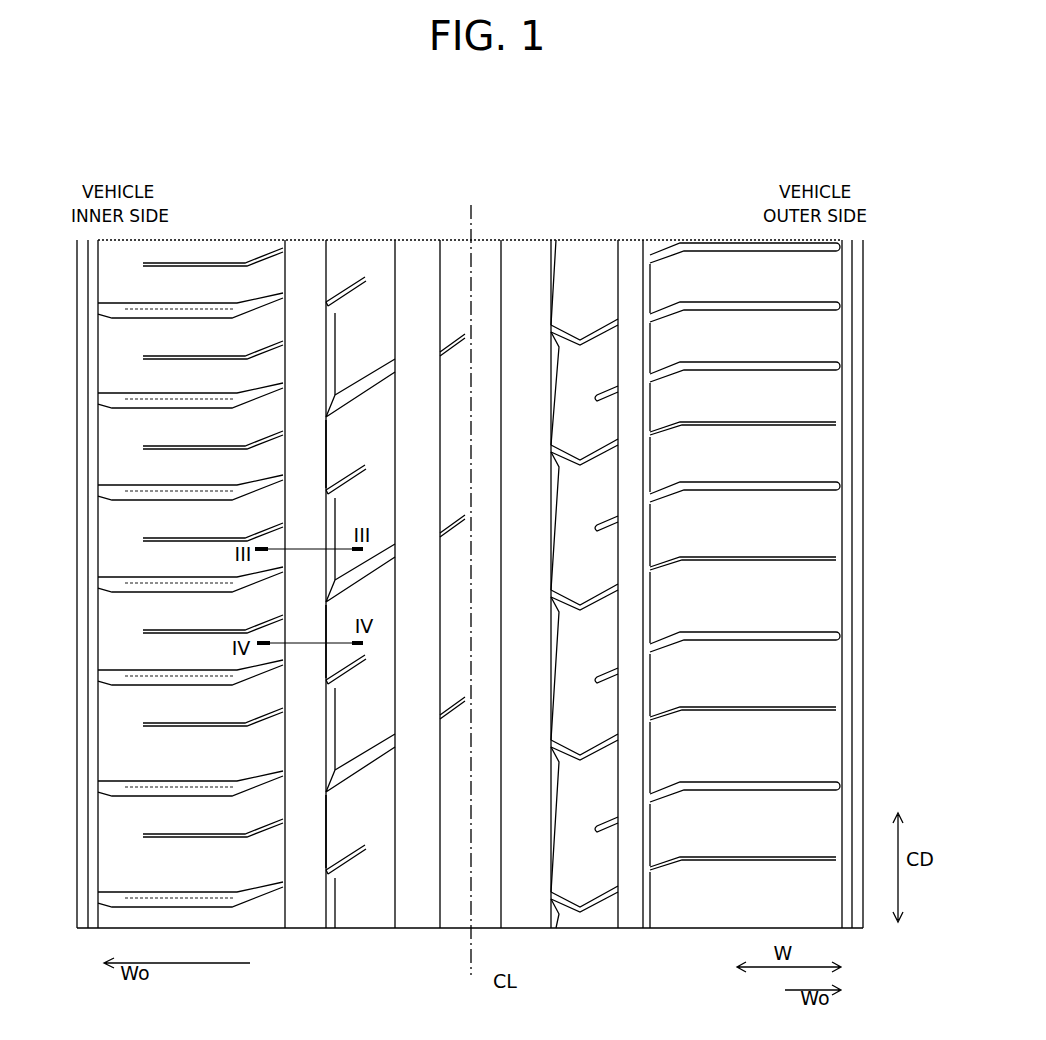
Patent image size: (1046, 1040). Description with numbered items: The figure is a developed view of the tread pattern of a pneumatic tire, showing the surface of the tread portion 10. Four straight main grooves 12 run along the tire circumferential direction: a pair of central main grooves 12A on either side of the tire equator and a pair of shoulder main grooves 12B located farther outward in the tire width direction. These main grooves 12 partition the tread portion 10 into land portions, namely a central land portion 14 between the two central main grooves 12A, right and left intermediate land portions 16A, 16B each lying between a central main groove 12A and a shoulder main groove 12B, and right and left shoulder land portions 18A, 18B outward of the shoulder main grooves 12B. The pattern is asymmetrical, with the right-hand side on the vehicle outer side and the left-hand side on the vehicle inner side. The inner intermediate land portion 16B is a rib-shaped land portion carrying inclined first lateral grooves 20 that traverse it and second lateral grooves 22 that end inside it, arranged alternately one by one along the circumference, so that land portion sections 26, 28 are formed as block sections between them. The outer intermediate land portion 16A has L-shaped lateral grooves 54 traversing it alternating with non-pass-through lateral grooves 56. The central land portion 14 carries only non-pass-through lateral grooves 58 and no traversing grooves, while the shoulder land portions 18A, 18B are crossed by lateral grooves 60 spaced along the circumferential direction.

The tread portion 10 is at (457, 186).
The main grooves 12 is at (474, 560).
The central main grooves 12A is at (416, 244).
The shoulder main grooves 12B is at (305, 244).
The central land portion 14 is at (460, 916).
The intermediate land portion 16A is at (583, 920).
The intermediate land portion 16B is at (356, 918).
The shoulder land portion 18A is at (697, 922).
The shoulder land portion 18B is at (246, 922).
The first lateral grooves 20 is at (376, 396).
The second lateral grooves 22 is at (350, 298).
The land portion section 26 is at (366, 340).
The land portion section 28 is at (356, 442).
The L-shaped lateral grooves 54 is at (600, 345).
The non-pass-through lateral grooves 56 is at (606, 392).
The non-pass-through lateral grooves 58 is at (455, 522).
The lateral grooves 60 is at (745, 782).